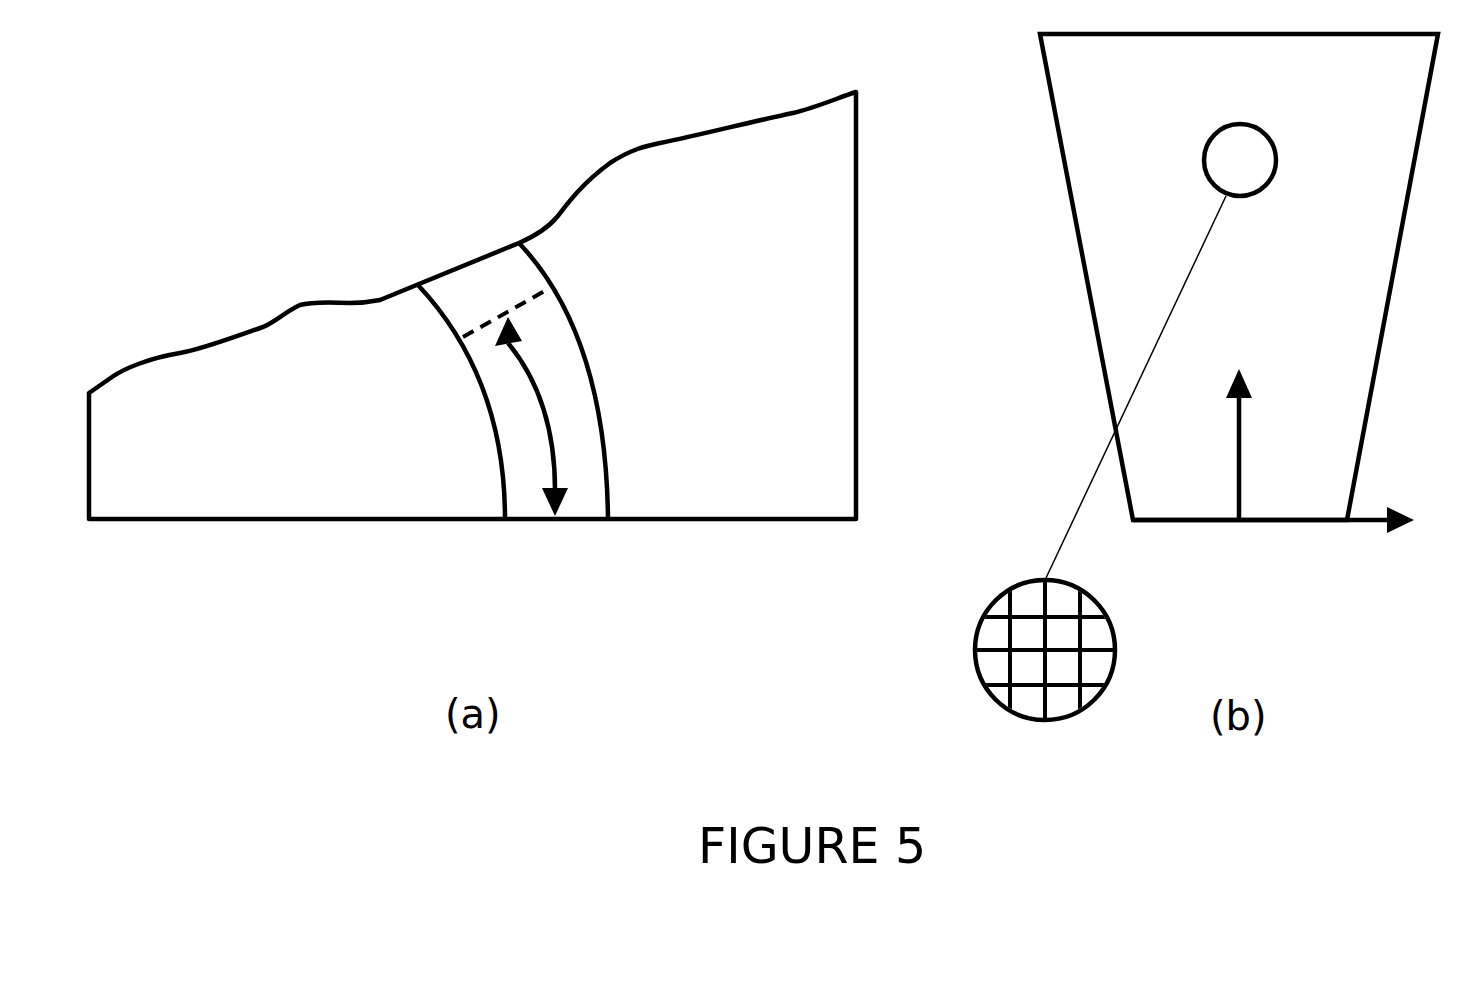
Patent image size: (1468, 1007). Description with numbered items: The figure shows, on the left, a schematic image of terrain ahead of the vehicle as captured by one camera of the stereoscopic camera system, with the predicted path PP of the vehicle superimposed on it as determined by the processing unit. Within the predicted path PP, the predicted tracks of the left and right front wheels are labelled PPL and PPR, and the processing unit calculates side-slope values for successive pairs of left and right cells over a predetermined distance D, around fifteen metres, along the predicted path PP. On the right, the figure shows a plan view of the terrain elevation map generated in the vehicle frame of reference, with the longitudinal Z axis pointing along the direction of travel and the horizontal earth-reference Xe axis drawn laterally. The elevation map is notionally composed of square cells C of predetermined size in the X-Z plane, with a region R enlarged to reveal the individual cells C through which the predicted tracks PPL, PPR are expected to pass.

The predicted path PP is at (445, 361).
The predicted left wheel track PPL is at (495, 420).
The predicted right wheel track PPR is at (603, 422).
The predetermined distance D is at (552, 440).
The region R is at (1203, 155).
The cells C is at (1043, 675).
The Z axis Z is at (1239, 430).
The Xe axis Xe is at (1290, 530).